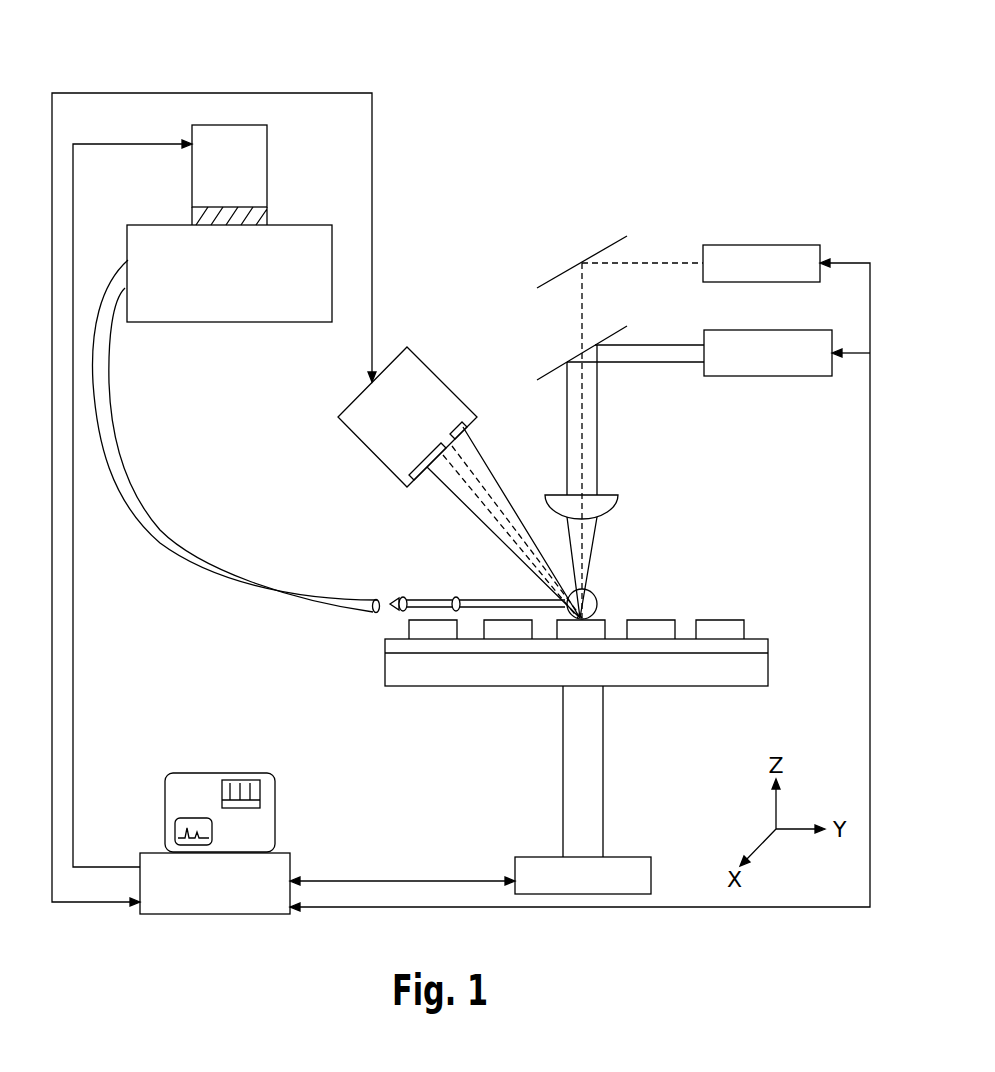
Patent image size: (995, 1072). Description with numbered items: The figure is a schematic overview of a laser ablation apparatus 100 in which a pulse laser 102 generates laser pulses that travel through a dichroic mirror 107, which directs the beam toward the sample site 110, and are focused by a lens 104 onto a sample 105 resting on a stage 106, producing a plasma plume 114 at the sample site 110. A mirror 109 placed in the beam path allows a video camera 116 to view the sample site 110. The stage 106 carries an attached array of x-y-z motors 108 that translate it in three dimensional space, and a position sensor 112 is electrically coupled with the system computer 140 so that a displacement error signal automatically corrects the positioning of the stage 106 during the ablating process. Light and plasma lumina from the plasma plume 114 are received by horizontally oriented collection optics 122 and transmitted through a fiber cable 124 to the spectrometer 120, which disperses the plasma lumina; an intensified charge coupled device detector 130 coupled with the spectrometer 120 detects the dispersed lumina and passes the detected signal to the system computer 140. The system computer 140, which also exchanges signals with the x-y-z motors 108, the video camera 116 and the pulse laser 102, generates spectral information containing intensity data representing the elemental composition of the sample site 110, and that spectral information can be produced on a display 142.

The laser ablation apparatus 100 is at (670, 88).
The pulse laser 102 is at (755, 329).
The lens 104 is at (614, 503).
The sample 105 is at (760, 638).
The stage 106 is at (685, 688).
The dichroic mirror 107 is at (614, 325).
The x-y-z motors 108 is at (622, 857).
The mirror 109 is at (614, 234).
The sample site 110 is at (600, 622).
The position sensor 112 is at (419, 356).
The plasma plume 114 is at (597, 601).
The video camera 116 is at (755, 244).
The spectrometer 120 is at (200, 323).
The collection optics 122 is at (448, 565).
The fiber cable 124 is at (132, 498).
The intensified charge coupled device (ICCD) detector 130 is at (268, 156).
The system computer 140 is at (185, 914).
The display 142 is at (227, 773).